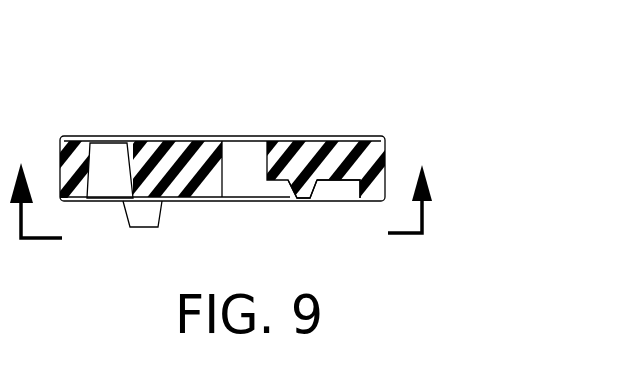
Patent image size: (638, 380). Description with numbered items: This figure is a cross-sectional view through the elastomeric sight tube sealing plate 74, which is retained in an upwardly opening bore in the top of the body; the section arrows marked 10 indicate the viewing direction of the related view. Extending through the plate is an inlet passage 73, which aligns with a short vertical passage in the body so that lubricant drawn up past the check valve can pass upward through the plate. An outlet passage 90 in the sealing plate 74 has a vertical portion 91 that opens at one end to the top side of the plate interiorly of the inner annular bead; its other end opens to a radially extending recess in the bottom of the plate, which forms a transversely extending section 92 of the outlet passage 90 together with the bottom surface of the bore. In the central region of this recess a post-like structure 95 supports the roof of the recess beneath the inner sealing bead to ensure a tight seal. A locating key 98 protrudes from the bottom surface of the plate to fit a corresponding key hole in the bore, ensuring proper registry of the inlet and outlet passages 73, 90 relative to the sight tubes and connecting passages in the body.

The sight tube sealing plate 74 is at (379, 120).
The vertical portion 91 is at (268, 157).
The inlet passage 73 is at (110, 135).
The outlet passage 90 is at (234, 188).
The post-like structure 95 is at (288, 199).
The transversely extending section 92 is at (340, 224).
The locating key 98 is at (126, 217).
The section line 10- 10 is at (8, 125).